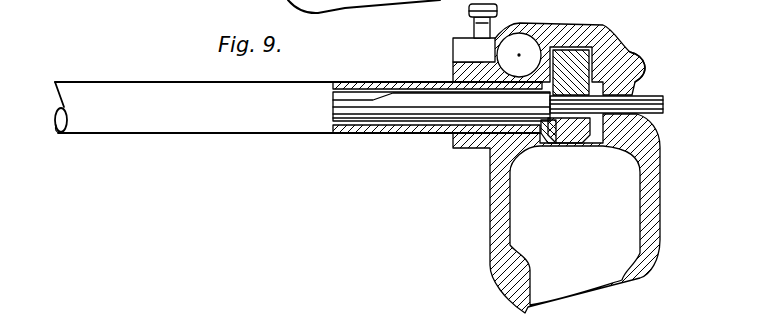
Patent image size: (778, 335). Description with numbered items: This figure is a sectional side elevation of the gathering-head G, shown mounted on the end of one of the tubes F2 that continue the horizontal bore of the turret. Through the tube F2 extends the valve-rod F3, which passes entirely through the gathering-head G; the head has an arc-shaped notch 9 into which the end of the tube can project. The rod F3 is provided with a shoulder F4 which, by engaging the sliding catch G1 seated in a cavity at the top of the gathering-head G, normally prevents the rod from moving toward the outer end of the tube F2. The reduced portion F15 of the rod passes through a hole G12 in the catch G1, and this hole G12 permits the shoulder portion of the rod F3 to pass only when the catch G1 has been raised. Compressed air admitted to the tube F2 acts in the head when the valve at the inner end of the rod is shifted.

The tube F2 is at (115, 97).
The valve-rod F3 is at (418, 105).
The shoulder F4 is at (553, 92).
The rod extension F15 is at (663, 110).
The bulge of body 9 is at (645, 64).
The gathering-head G is at (499, 206).
The sliding catch G1 is at (566, 124).
The hole G12 is at (552, 132).